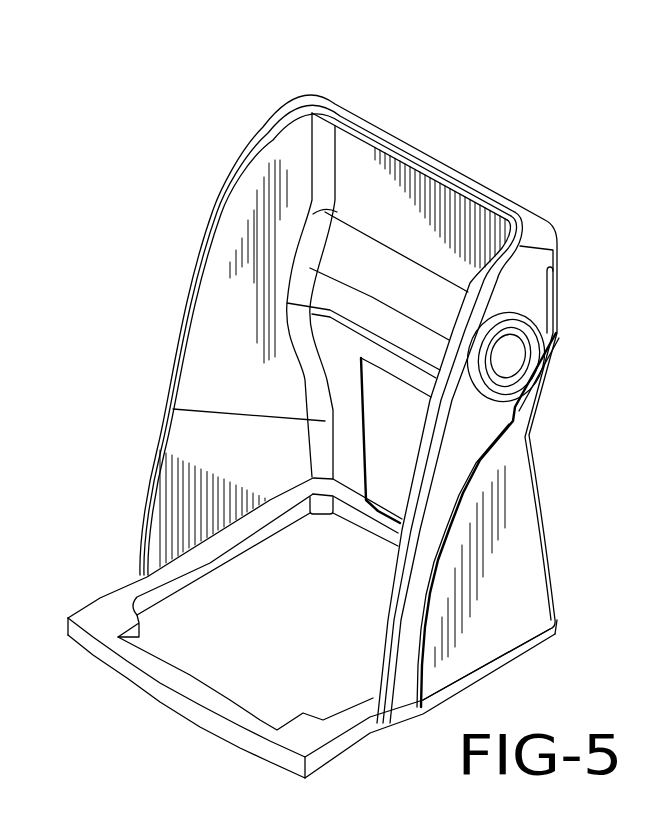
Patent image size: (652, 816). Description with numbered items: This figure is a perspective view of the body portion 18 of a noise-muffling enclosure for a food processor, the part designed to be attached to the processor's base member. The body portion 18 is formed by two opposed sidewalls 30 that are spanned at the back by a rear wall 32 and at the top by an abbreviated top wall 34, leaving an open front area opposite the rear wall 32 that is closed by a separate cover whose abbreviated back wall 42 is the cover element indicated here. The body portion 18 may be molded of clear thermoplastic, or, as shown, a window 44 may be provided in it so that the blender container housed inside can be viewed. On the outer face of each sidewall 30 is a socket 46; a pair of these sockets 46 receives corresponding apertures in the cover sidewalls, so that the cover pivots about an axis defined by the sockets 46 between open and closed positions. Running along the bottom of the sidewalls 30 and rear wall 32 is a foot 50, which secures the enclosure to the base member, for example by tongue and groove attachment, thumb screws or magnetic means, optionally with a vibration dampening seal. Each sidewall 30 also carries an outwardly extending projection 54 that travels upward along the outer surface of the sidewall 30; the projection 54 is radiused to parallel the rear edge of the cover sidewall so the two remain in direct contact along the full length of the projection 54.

The body portion 18 is at (183, 144).
The sidewalls 30 is at (167, 450).
The rear wall 32 is at (487, 242).
The abbreviated top wall 34 is at (394, 152).
The abbreviated back wall 42 is at (0, 88).
The windows 44 is at (392, 492).
The sockets 46 is at (527, 333).
The foot 50 is at (100, 616).
The projection 54 is at (479, 470).